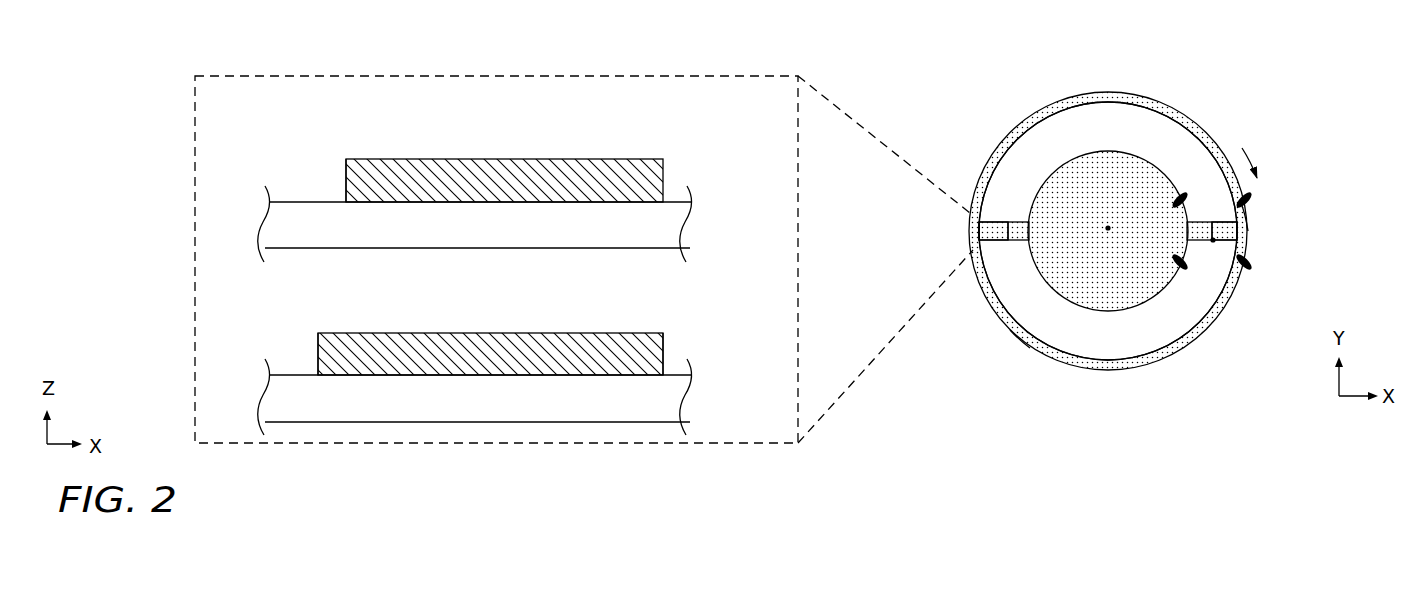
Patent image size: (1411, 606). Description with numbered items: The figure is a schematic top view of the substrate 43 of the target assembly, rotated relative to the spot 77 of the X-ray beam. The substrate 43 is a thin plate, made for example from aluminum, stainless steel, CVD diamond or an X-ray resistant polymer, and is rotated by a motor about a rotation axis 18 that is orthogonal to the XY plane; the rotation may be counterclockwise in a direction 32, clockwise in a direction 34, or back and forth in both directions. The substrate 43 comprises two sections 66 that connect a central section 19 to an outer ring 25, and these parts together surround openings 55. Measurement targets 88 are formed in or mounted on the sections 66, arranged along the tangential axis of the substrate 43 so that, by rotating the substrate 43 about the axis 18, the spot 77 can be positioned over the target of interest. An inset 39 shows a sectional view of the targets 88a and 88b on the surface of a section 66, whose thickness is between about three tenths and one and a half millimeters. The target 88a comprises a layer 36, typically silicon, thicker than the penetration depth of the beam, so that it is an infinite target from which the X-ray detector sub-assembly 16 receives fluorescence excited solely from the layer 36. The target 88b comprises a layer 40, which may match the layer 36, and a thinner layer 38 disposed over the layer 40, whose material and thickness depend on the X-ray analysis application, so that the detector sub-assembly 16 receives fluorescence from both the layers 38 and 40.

The X-ray detector sub-assembly 16 is at (1268, 231).
The rotation axis 18 is at (1108, 231).
The section of substrate 19 is at (1073, 248).
The outer ring 25 is at (1017, 339).
The counterclockwise rotation direction 32 is at (1228, 132).
The clockwise rotation direction 34 is at (1258, 152).
The layer 36 is at (626, 159).
The layer 38 is at (636, 333).
The inset 39 is at (195, 262).
The layer 40 is at (665, 342).
The substrate 43 is at (1334, 97).
The openings 55 is at (1128, 140).
The sections 66 is at (483, 241).
The spot 77 is at (1213, 242).
The measurement targets 88 is at (155, 122).
The target 88a is at (335, 177).
The target 88b is at (308, 355).